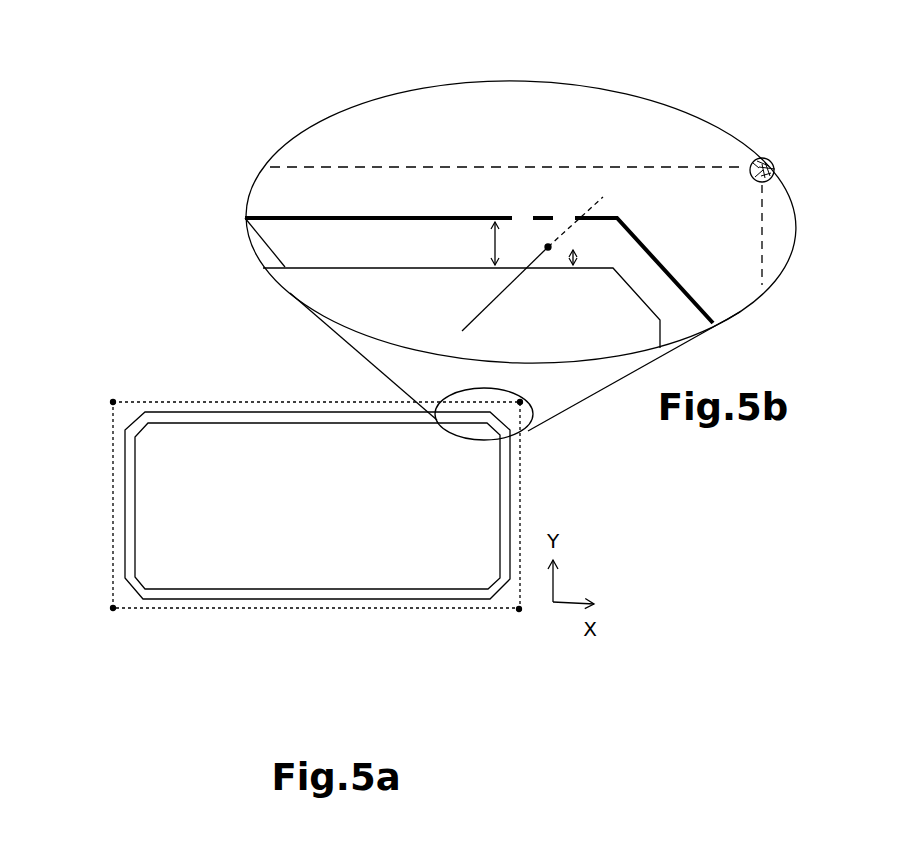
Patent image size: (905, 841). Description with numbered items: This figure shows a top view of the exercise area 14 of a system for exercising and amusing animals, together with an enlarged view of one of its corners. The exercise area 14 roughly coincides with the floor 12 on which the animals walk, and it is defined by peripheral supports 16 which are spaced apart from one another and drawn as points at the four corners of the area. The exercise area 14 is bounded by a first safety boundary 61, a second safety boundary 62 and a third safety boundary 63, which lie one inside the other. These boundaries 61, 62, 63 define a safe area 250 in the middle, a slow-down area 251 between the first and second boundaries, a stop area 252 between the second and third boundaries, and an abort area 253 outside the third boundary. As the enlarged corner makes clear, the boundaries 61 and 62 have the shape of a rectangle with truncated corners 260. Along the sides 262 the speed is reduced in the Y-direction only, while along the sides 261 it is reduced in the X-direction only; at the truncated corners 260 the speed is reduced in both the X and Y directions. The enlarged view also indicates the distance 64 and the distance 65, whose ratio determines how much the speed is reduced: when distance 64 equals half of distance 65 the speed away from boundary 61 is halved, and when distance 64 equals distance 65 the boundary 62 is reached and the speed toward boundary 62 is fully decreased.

In FIG. 5A, the floor 12 is at (362, 520).
In FIG. 5A, the exercise area 14 is at (208, 520).
In FIG. 5B, the peripheral supports 16 is at (765, 158).
In FIG. 5A, the peripheral supports 16 is at (113, 399).
In FIG. 5B, the first safety boundary 61 is at (245, 218).
In FIG. 5A, the first safety boundary 61 is at (182, 422).
In FIG. 5B, the second safety boundary 62 is at (277, 213).
In FIG. 5A, the second safety boundary 62 is at (227, 411).
In FIG. 5B, the third safety boundary 63 is at (332, 165).
In FIG. 5A, the third safety boundary 63 is at (284, 400).
In FIG. 5B, the distance 64 is at (578, 257).
In FIG. 5B, the distance 65 is at (488, 243).
In FIG. 5B, the safe area 250 is at (526, 343).
In FIG. 5B, the slow-down area 251 is at (659, 286).
In FIG. 5B, the stop area 252 is at (659, 224).
In FIG. 5B, the abort area 253 is at (631, 145).
In FIG. 5B, the truncated corners 260 is at (733, 243).
In FIG. 5A, the truncated corners 260 is at (123, 425).
In FIG. 5A, the sides 261 is at (108, 502).
In FIG. 5A, the sides 262 is at (323, 399).